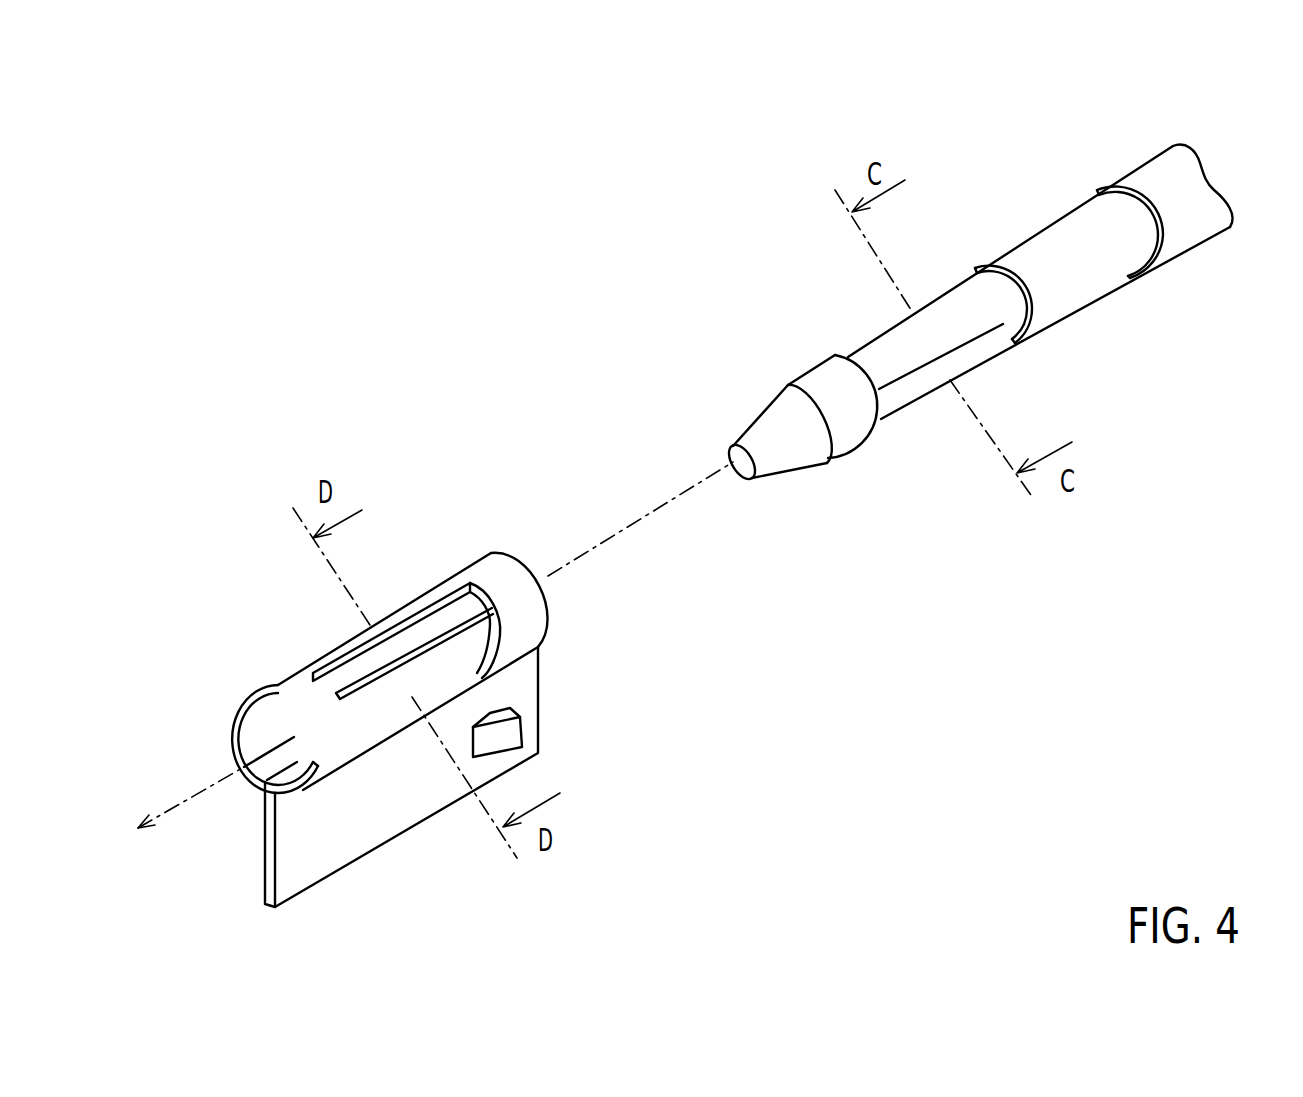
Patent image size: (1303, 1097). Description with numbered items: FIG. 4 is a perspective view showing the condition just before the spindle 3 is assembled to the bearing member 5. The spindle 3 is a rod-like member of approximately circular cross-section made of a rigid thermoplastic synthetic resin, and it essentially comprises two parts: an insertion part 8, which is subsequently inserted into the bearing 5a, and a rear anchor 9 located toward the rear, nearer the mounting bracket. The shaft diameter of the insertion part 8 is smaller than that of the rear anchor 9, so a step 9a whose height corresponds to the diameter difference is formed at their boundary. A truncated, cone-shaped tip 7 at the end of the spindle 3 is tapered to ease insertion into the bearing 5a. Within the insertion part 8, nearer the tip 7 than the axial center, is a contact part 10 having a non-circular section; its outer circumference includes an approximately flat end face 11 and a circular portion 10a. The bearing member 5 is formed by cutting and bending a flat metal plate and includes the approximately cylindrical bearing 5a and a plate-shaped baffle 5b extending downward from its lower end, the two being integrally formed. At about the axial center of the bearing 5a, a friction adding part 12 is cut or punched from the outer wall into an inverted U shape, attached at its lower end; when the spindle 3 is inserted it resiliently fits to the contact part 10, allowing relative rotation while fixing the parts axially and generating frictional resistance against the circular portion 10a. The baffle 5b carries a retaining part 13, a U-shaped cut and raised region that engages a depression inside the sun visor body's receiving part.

The spindle 3 is at (1143, 143).
The bearing member 5 is at (510, 531).
The bearing 5a is at (286, 694).
The baffle 5b is at (287, 848).
The tip 7 is at (778, 421).
The insertion part 8 is at (1027, 283).
The rear anchor 9 is at (1220, 241).
The step 9a is at (1098, 190).
The contact part 10 is at (895, 302).
The circular portion 10a is at (1032, 300).
The end face 11 is at (988, 295).
The friction adding part 12 is at (450, 660).
The retaining part 13 is at (502, 735).